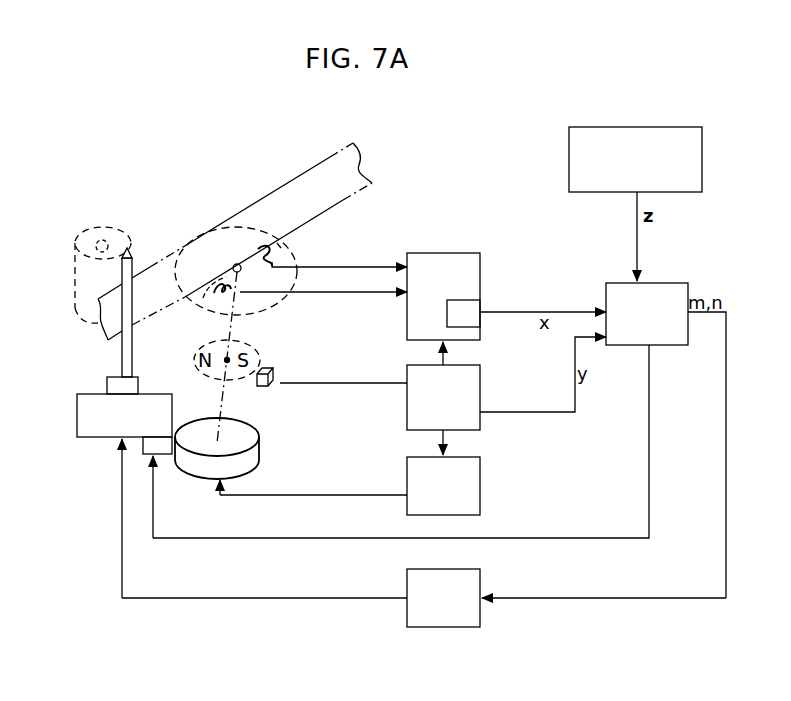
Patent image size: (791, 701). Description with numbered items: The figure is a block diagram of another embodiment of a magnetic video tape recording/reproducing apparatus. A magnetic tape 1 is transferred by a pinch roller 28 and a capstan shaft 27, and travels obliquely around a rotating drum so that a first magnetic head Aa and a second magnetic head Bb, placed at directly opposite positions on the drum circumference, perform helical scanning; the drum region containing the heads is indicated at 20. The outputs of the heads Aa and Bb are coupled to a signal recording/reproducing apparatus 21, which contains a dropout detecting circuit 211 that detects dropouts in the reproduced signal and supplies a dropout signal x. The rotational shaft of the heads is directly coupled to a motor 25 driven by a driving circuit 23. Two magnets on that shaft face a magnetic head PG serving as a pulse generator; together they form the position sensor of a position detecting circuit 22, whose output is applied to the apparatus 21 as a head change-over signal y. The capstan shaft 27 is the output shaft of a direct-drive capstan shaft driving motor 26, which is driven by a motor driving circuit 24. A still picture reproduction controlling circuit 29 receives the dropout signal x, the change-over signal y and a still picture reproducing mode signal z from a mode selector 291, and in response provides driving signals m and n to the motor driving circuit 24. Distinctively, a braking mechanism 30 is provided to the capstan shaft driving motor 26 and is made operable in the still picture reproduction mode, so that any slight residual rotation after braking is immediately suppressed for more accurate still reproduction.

The magnetic tape 1 is at (361, 168).
The magnetic head 20 is at (247, 227).
The signal recording/reproducing apparatus 21 is at (481, 270).
The dropout detecting circuit 211 is at (475, 308).
The position detecting circuit 22 is at (481, 383).
The driving circuit 23 is at (481, 480).
The motor driving circuit 24 is at (481, 577).
The motor 25 is at (259, 450).
The capstan shaft driving motor 26 is at (77, 421).
The capstan shaft 27 is at (122, 352).
The pinch roller 28 is at (130, 232).
The still picture reproduction controlling circuit 29 is at (674, 288).
The mode selector 291 is at (572, 158).
The braking mechanism 30 is at (166, 456).
The first magnetic head Aa is at (207, 300).
The second magnetic head Bb is at (283, 243).
The magnetic head serving as pulse generator PG is at (275, 362).